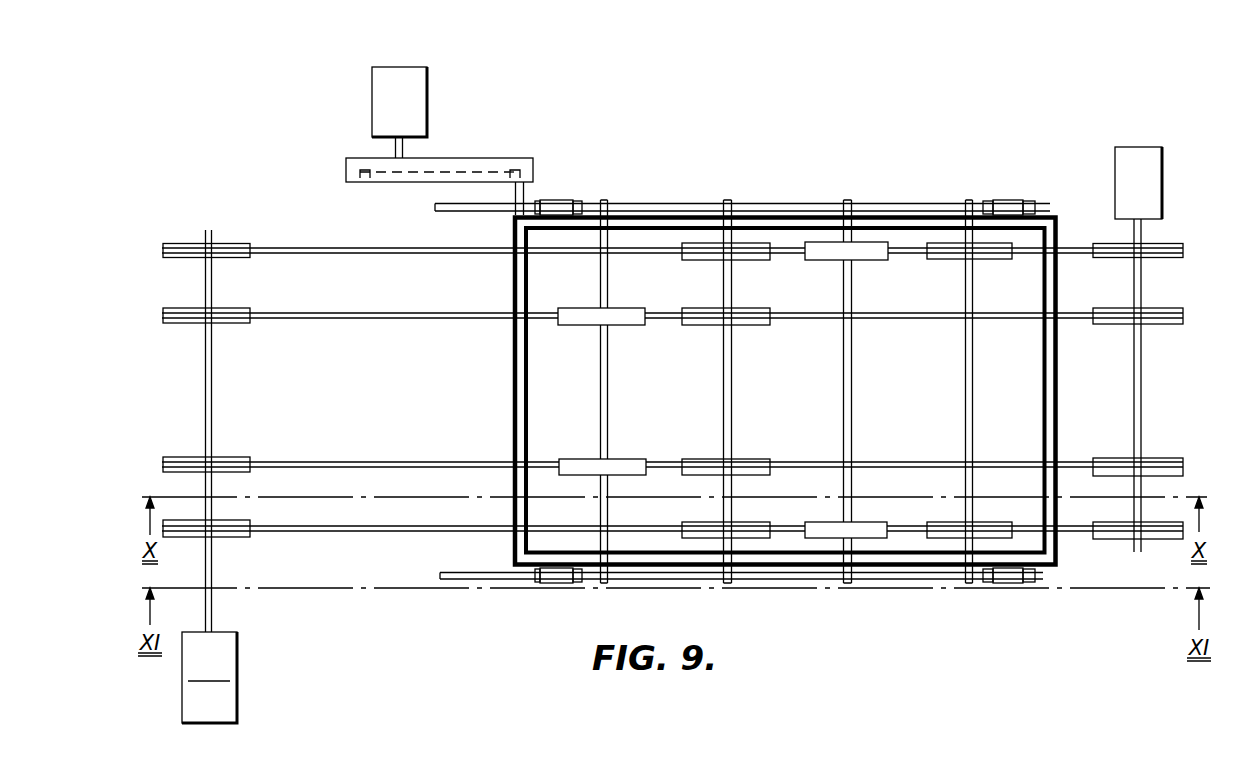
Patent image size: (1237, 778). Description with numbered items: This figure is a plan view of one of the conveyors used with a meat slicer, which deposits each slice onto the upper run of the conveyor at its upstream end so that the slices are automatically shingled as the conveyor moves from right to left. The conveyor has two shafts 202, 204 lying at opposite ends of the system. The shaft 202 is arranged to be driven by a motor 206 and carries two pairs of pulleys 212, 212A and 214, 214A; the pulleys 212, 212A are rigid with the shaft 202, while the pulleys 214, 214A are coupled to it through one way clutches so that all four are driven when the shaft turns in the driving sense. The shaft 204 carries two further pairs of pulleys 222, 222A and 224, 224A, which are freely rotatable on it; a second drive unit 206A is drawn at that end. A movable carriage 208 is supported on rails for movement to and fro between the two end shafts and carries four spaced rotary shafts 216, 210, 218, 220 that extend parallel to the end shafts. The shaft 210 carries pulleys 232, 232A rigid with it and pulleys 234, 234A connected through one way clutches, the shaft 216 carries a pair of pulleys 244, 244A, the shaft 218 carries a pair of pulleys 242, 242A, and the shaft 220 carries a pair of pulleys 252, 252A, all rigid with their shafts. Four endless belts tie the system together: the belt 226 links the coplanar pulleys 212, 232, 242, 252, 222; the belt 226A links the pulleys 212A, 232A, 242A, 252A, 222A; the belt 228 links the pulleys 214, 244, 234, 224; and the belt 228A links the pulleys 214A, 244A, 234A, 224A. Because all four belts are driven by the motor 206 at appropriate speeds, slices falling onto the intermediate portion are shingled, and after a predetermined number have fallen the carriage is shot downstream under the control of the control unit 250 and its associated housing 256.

The shaft 202 is at (205, 392).
The shaft 204 is at (1133, 407).
The motor 206 is at (209, 677).
The motor 206A is at (1122, 174).
The movable carriage 208 is at (512, 398).
The rotary shaft 210 is at (723, 413).
The pulley 212 is at (193, 540).
The pulley 212A is at (195, 244).
The pulley 214 is at (192, 457).
The pulley 214A is at (197, 323).
The rotary shaft 216 is at (600, 413).
The rotary shaft 218 is at (843, 413).
The rotary shaft 220 is at (965, 411).
The pulley 222 is at (1115, 540).
The pulley 222A is at (1122, 262).
The pulley 224 is at (1138, 467).
The pulley 224A is at (1122, 325).
The endless belt 226 is at (385, 532).
The endless belt 226A is at (400, 255).
The endless belt 228 is at (380, 462).
The endless belt 228A is at (383, 318).
The pulley 232 is at (690, 522).
The pulley 232A is at (703, 260).
The pulley 234 is at (716, 459).
The pulley 234A is at (706, 325).
The pulley 242 is at (823, 522).
The pulley 242A is at (830, 260).
The pulley 244 is at (578, 452).
The pulley 244A is at (590, 325).
The control unit 250 is at (373, 97).
The pulley 252 is at (940, 522).
The pulley 252A is at (950, 260).
The controller housing 256 is at (346, 172).